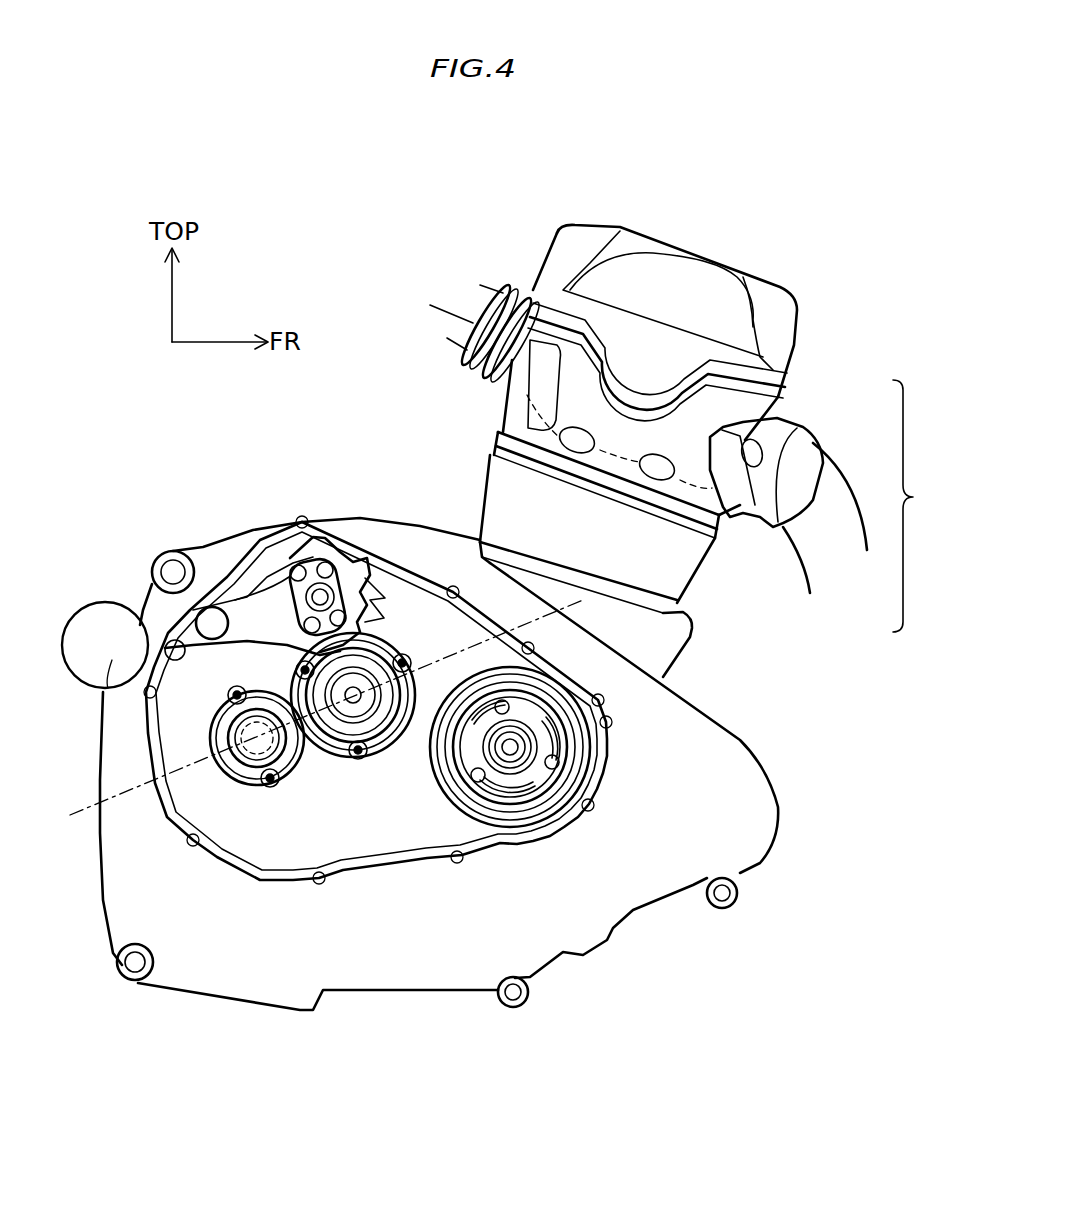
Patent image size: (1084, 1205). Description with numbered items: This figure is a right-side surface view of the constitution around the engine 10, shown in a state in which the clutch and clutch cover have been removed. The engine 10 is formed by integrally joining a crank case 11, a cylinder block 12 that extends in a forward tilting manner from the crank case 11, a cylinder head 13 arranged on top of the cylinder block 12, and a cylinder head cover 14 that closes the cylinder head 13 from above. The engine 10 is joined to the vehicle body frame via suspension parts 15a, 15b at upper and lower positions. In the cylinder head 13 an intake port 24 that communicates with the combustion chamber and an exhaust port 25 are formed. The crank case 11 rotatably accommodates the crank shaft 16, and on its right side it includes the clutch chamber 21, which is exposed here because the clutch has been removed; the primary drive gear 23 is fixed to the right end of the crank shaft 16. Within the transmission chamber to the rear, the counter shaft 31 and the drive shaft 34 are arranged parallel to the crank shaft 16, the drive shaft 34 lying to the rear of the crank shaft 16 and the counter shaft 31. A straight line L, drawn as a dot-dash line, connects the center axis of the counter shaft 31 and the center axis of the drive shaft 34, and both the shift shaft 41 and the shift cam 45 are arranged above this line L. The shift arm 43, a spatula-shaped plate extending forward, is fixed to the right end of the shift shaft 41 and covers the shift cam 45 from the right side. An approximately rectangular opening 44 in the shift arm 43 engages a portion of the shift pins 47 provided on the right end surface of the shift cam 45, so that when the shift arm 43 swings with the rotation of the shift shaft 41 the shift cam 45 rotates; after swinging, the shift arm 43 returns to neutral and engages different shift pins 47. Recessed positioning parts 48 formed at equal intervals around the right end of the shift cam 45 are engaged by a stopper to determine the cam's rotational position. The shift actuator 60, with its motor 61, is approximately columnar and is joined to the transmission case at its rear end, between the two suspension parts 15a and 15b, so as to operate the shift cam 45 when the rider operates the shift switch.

The engine 10 is at (918, 506).
The crank case 11 is at (780, 767).
The cylinder block 12 is at (690, 588).
The cylinder head 13 is at (786, 399).
The cylinder head cover 14 is at (796, 346).
The suspension part 15a is at (173, 560).
The suspension part 15b is at (132, 965).
The crank shaft 16 is at (522, 755).
The clutch chamber 21 is at (383, 812).
The primary drive gear 23 is at (520, 795).
The intake port 24 is at (482, 322).
The exhaust port 25 is at (750, 503).
The counter shaft 31 is at (353, 705).
The drive shaft 34 is at (257, 750).
The shift shaft 41 is at (214, 618).
The shift arm 43 is at (250, 605).
The opening 44 is at (289, 572).
The shift cam 45 is at (368, 582).
The shift pins 47 is at (300, 565).
The positioning parts 48 is at (347, 568).
The shift actuator 60 is at (78, 590).
The motor 61 is at (118, 620).
The straight line L is at (90, 800).